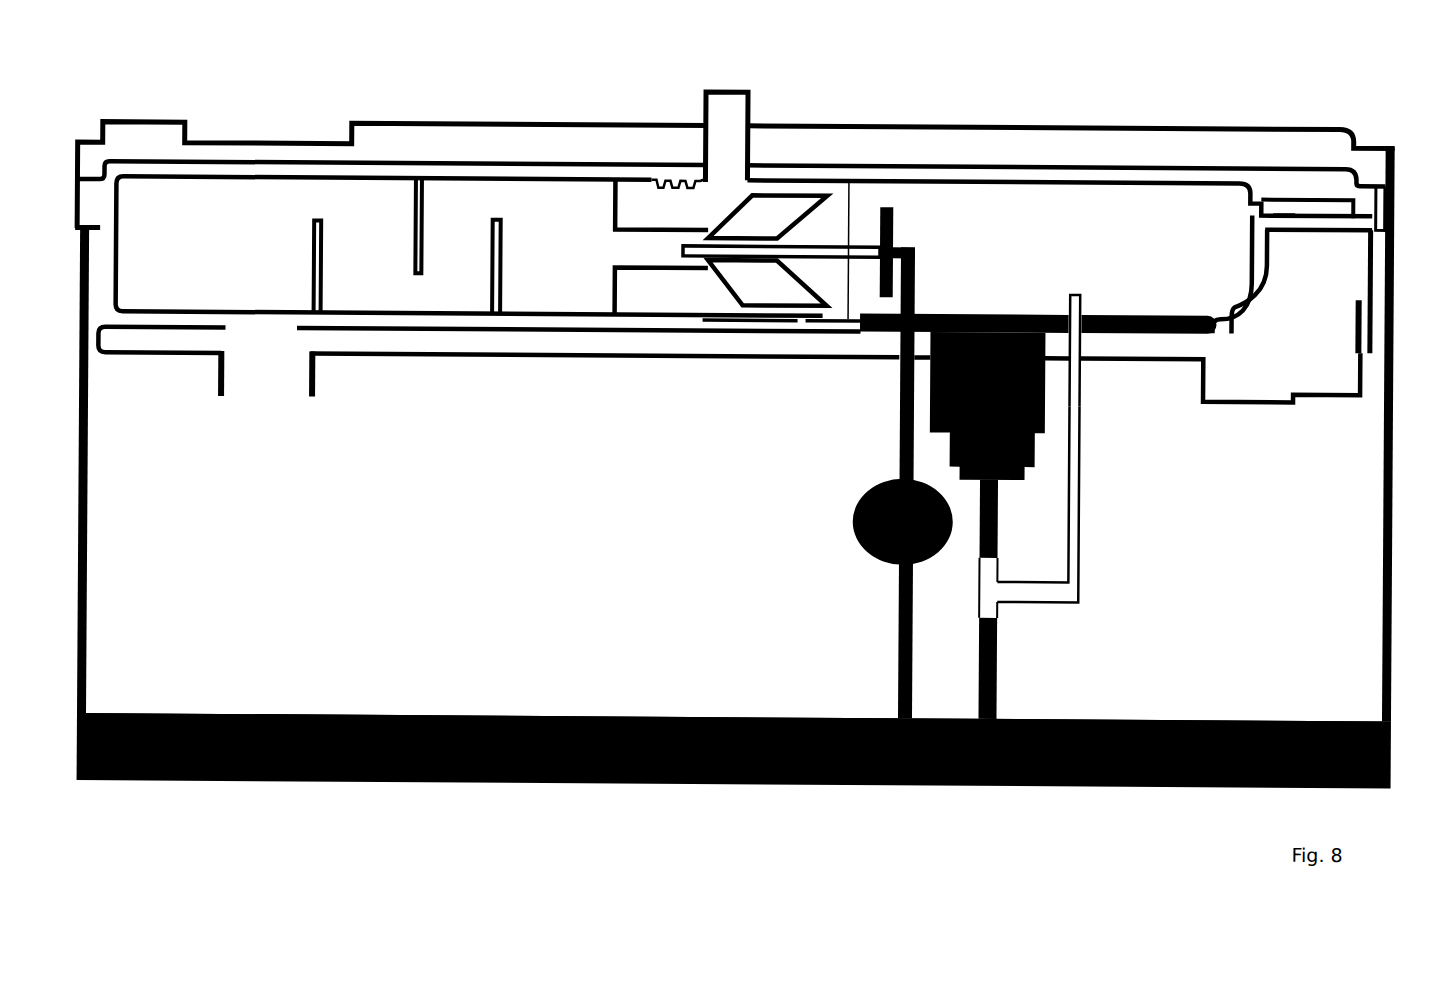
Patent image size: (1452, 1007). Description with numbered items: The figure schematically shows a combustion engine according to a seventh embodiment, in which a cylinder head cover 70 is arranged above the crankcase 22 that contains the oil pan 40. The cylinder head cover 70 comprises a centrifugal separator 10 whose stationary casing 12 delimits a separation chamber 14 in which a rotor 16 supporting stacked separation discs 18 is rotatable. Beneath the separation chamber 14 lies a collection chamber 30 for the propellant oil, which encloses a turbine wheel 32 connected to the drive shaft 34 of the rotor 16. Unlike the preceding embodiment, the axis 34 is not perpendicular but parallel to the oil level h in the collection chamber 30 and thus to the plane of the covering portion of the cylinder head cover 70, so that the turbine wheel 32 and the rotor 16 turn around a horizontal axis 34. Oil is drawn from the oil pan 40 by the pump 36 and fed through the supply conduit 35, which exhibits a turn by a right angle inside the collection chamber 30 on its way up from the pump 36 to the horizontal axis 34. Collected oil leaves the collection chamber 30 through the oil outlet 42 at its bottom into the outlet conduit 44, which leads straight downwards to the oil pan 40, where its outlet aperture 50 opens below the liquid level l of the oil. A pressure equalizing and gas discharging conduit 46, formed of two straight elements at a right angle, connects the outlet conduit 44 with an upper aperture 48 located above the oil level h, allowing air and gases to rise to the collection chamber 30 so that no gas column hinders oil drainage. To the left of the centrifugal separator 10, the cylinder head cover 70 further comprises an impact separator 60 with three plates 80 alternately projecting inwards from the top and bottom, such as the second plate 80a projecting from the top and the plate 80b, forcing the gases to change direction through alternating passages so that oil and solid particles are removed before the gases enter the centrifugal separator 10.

The centrifugal separator 10 is at (620, 243).
The stationary casing 12 is at (887, 222).
The separation chamber 14 is at (847, 213).
The rotor 16 is at (774, 204).
The separation discs 18 is at (790, 208).
The crankcase 22 is at (1388, 632).
The collection chamber 30 is at (1010, 212).
The turbine wheel 32 is at (1005, 211).
The drive shaft 34 is at (820, 222).
The supply conduit 35 is at (898, 405).
The oil pump 36 is at (857, 495).
The oil pan 40 is at (842, 780).
The oil outlet 42 is at (1011, 474).
The outlet conduit 44 is at (987, 604).
The pressure equalizing and gas discharging conduit 46 is at (1073, 437).
The upper aperture 48 is at (1077, 286).
The outlet aperture 50 is at (1002, 706).
The impact separator 60 is at (297, 198).
The cylinder head cover 70 is at (401, 145).
The plates 80 is at (317, 261).
The second plate 80a is at (426, 213).
The plate 80b is at (501, 267).
The oil level h is at (1106, 306).
The liquid level l is at (606, 712).